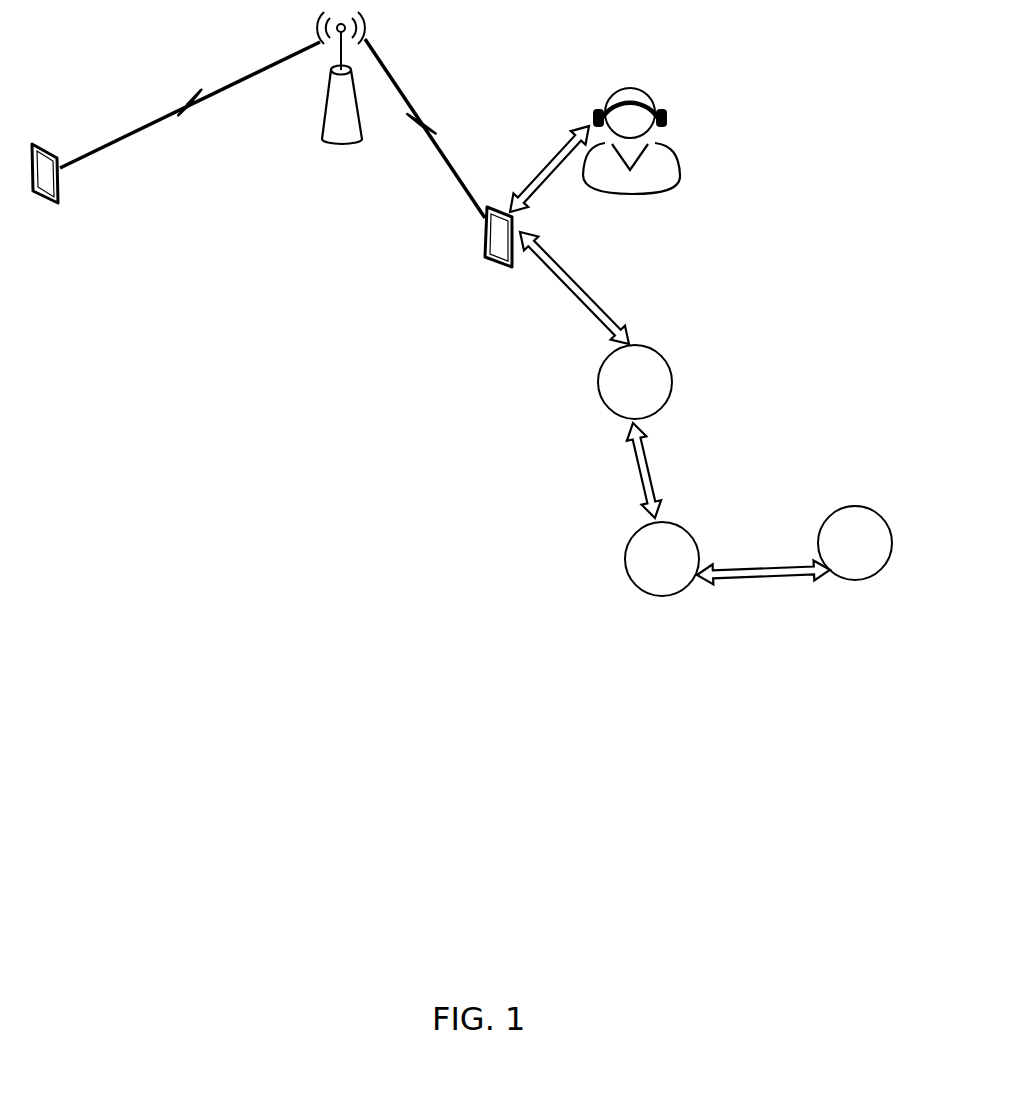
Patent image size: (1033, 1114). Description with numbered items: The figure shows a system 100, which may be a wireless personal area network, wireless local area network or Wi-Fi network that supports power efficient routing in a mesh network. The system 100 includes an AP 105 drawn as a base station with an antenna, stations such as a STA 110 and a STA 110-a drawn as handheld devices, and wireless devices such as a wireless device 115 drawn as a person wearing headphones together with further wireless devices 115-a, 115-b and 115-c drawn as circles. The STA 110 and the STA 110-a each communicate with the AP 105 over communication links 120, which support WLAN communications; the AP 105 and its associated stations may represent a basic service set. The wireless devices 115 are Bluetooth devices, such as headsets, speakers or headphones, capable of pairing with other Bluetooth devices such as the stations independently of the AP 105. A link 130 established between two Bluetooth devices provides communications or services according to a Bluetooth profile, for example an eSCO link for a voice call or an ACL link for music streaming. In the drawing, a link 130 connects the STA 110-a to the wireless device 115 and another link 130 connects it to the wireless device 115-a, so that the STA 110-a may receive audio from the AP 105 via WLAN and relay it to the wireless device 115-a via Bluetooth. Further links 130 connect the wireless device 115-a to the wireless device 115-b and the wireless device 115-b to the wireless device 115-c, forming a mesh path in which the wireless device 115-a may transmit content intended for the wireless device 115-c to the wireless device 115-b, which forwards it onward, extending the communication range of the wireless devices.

The system 100 is at (815, 931).
The AP 105 is at (325, 105).
The station (STA) 110 is at (60, 192).
The station (STA) 110-a is at (487, 258).
The wireless device 115 is at (663, 100).
The wireless device 115-a is at (660, 355).
The wireless device 115-b is at (692, 537).
The wireless device 115-c is at (873, 512).
The communication link 120 is at (247, 78).
The link 130 is at (553, 155).